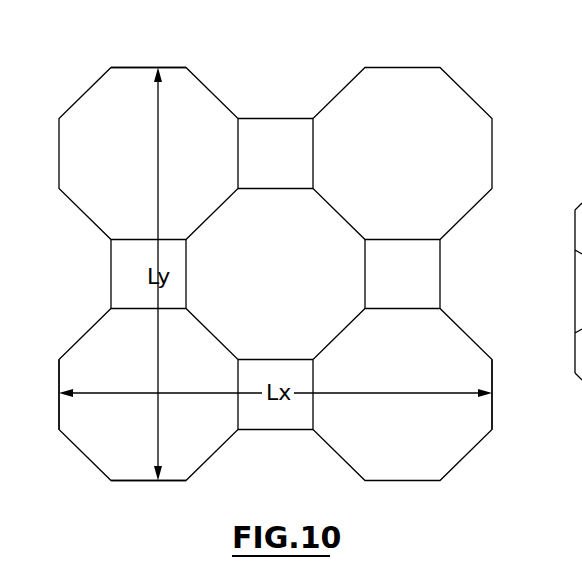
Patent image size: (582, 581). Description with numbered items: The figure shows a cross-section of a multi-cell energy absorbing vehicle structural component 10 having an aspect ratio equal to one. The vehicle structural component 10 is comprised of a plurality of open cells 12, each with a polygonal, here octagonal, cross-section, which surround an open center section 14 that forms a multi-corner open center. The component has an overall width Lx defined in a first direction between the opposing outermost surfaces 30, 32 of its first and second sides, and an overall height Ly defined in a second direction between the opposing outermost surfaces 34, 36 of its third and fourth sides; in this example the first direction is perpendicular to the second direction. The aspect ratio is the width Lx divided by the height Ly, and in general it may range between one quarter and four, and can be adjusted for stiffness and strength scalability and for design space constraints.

The vehicle structural component 10 is at (299, 291).
The open cells 12 is at (197, 108).
The open center section 14 is at (292, 276).
The outermost surface of first side 30 is at (492, 375).
The outermost surface of second side 32 is at (59, 378).
The outermost surface of third side 34 is at (133, 66).
The outermost surface of fourth side 36 is at (170, 480).